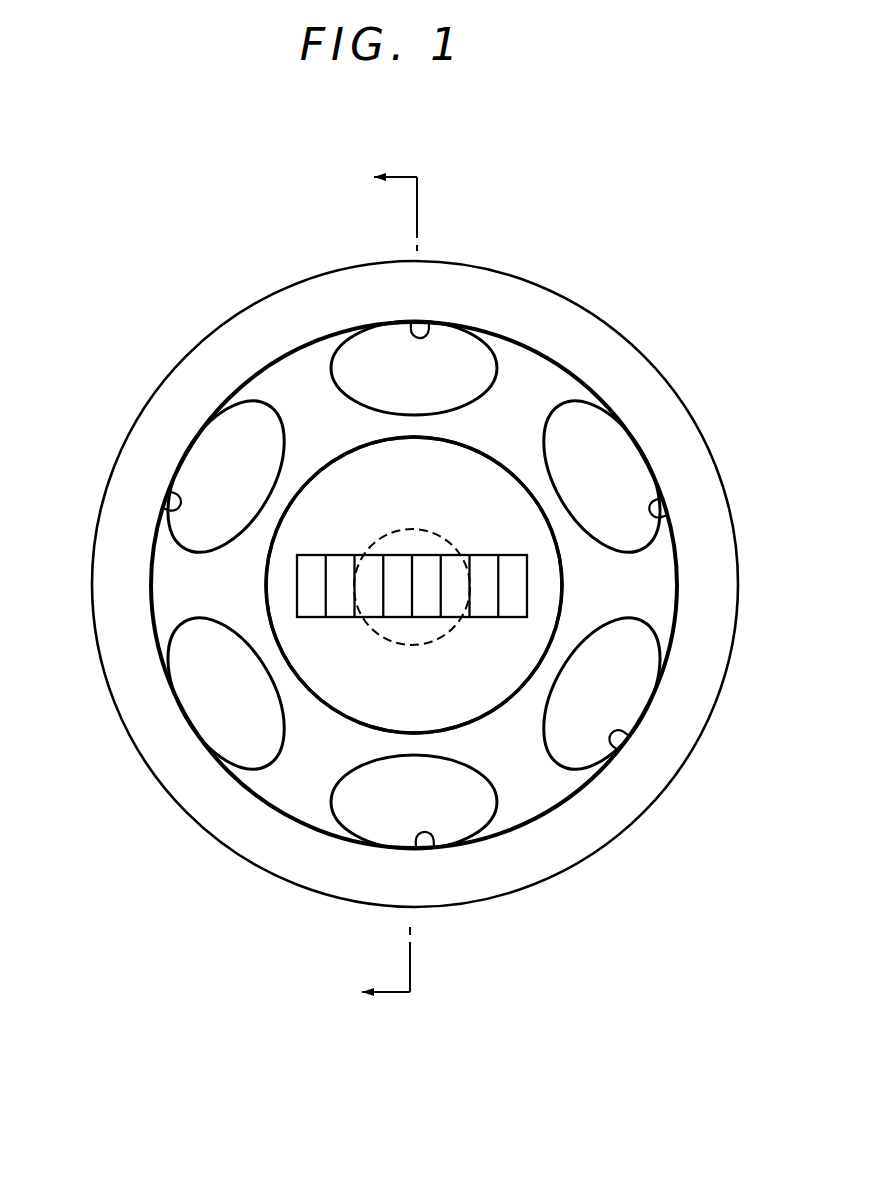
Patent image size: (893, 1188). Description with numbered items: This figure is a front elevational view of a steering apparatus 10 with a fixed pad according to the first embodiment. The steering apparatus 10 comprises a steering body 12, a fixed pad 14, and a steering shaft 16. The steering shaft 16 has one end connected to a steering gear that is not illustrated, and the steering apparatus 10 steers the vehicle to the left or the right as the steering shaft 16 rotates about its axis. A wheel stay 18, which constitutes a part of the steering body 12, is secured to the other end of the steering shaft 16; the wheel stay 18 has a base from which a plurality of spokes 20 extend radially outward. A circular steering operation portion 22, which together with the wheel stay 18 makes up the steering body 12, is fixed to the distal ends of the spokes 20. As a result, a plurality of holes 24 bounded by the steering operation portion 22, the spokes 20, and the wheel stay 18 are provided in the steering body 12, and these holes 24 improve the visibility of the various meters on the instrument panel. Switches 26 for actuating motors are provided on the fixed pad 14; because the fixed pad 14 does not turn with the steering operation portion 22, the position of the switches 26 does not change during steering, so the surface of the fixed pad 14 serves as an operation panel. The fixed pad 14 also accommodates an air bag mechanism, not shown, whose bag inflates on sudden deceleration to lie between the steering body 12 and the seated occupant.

The steering apparatus 10 is at (141, 289).
The steering body 12 is at (616, 328).
The fixed pad 14 is at (545, 497).
The steering shaft 16 is at (447, 537).
The wheel stay 18 is at (545, 673).
The spokes 20 is at (353, 340).
The steering operation portion 22 is at (695, 465).
The holes 24 is at (428, 321).
The switches 26 is at (325, 617).